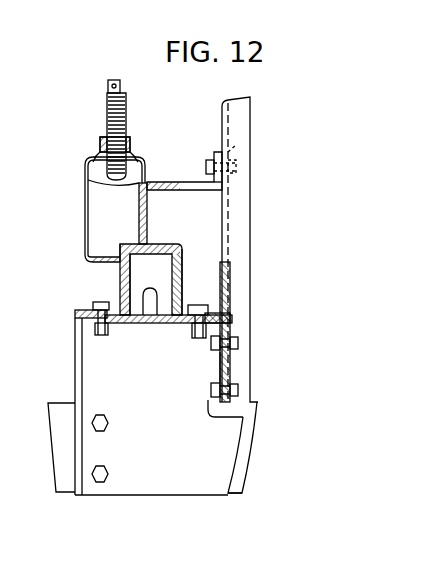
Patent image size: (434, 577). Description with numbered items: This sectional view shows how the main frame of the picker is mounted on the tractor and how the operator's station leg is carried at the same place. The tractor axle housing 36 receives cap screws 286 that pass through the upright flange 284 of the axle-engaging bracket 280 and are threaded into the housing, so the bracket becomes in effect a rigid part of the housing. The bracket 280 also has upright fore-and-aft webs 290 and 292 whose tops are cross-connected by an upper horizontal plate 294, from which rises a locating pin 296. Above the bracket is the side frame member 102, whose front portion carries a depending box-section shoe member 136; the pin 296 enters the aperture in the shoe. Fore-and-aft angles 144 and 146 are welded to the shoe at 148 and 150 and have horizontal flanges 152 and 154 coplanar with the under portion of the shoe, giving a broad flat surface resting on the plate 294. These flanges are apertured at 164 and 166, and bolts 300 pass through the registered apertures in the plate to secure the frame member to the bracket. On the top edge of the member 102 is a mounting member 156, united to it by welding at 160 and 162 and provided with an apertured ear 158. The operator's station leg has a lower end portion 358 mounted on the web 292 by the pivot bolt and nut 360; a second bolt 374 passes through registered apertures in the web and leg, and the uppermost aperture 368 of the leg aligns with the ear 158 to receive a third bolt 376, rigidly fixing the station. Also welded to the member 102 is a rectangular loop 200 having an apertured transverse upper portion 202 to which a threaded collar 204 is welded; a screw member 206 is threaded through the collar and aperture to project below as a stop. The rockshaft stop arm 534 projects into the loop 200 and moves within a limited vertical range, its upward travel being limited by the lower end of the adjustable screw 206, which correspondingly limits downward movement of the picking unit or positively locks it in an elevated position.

The screw member 206 is at (110, 86).
The threaded collar 204 is at (101, 142).
The apertured transverse upper portion 202 is at (93, 158).
The rectangular loop 200 is at (87, 215).
The welding 160 is at (139, 183).
The side frame member 102 is at (142, 203).
The weld 148 is at (118, 267).
The shoe member 136 is at (119, 256).
The weld 150 is at (180, 273).
The angle 144 is at (119, 282).
The angle 146 is at (184, 277).
The locating pin 296 is at (150, 298).
The upper horizontal plate 294 is at (130, 323).
The horizontal flange 152 is at (86, 327).
The aperture 164 is at (97, 318).
The bolts 300 is at (98, 333).
The horizontal flange 154 is at (213, 309).
The aperture 166 is at (229, 317).
The second bolt 374 is at (237, 343).
The lower end portion 358 is at (238, 391).
The bolt and nut 360 is at (226, 383).
The stop arm 534 is at (240, 113).
The uppermost aperture 368 is at (229, 150).
The apertured ear 158 is at (216, 157).
The bolt 376 is at (234, 168).
The mounting member 156 is at (192, 182).
The welding 162 is at (222, 188).
The web 292 is at (250, 418).
The axle-engaging bracket 280 is at (236, 501).
The upright flange 284 is at (145, 490).
The axle housing 36 is at (62, 433).
The web 290 is at (97, 428).
The cap screws 286 is at (93, 475).